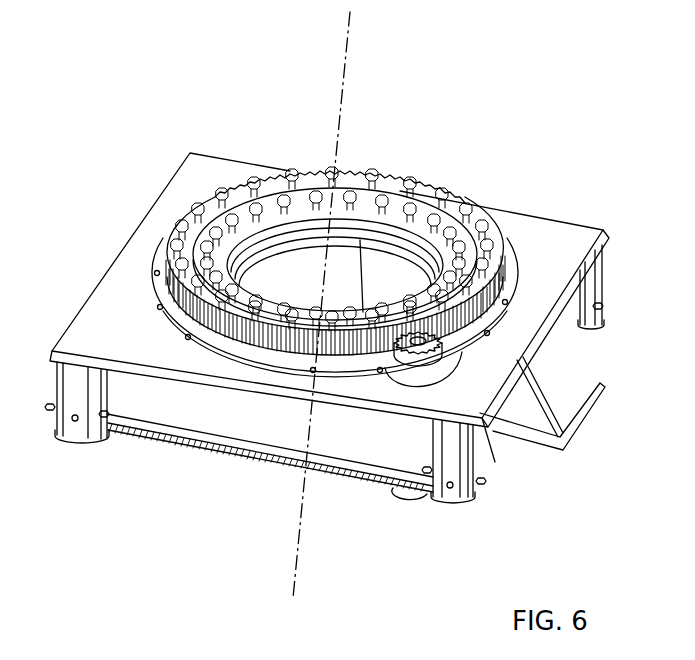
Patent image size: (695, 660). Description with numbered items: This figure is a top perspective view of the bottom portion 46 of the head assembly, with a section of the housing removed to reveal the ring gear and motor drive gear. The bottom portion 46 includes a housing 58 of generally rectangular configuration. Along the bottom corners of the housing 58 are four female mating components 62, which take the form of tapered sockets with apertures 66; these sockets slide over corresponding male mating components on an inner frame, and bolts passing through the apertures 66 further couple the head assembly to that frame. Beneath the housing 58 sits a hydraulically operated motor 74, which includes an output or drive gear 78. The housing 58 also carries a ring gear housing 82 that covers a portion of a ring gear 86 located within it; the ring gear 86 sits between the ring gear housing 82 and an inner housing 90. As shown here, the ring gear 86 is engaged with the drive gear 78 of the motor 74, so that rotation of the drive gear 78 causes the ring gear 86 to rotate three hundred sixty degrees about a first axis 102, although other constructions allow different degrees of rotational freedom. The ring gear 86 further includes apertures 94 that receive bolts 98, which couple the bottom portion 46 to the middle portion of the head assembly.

The bottom portion 46 is at (124, 114).
The housing 58 is at (553, 224).
The female mating components 62 is at (88, 438).
The apertures 66 is at (73, 421).
The motor 74 is at (408, 497).
The drive gear 78 is at (462, 342).
The ring gear housing 82 is at (158, 290).
The ring gear 86 is at (294, 349).
The inner housing 90 is at (330, 222).
The apertures 94 is at (456, 200).
The bolts 98 is at (300, 168).
The first axis 102 is at (350, 44).